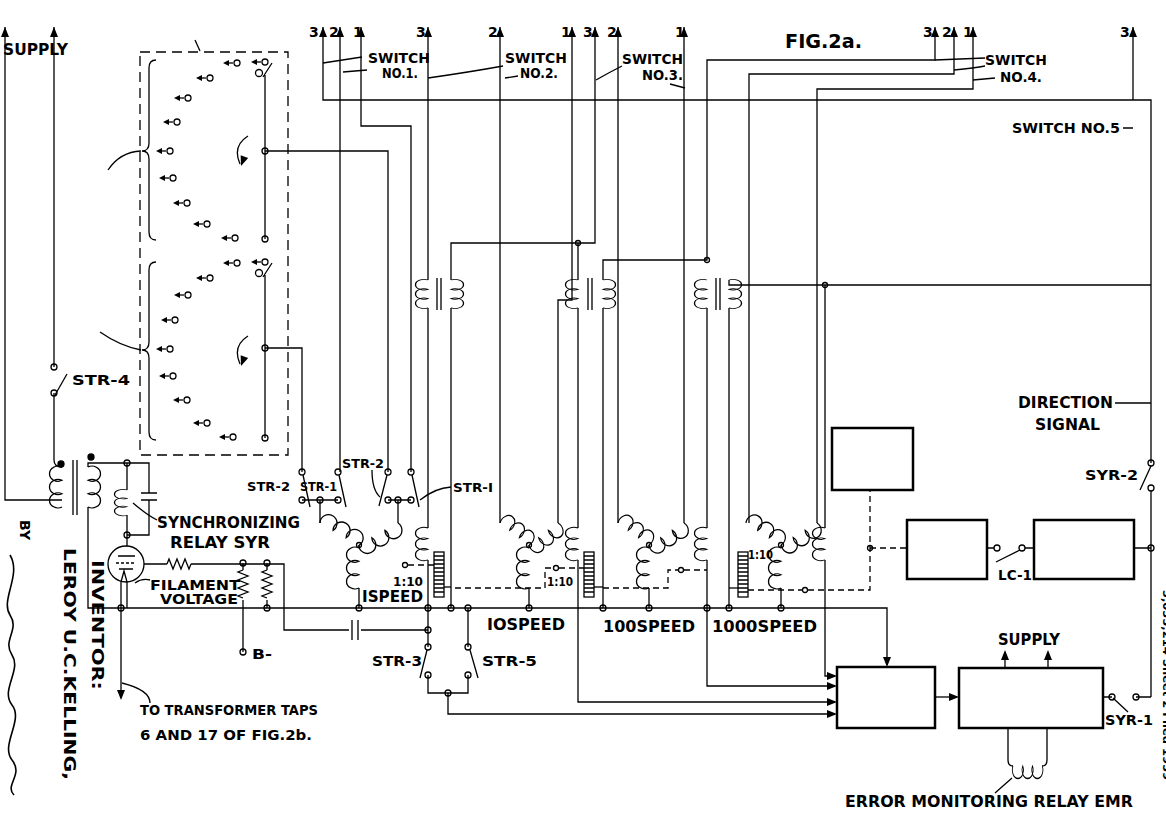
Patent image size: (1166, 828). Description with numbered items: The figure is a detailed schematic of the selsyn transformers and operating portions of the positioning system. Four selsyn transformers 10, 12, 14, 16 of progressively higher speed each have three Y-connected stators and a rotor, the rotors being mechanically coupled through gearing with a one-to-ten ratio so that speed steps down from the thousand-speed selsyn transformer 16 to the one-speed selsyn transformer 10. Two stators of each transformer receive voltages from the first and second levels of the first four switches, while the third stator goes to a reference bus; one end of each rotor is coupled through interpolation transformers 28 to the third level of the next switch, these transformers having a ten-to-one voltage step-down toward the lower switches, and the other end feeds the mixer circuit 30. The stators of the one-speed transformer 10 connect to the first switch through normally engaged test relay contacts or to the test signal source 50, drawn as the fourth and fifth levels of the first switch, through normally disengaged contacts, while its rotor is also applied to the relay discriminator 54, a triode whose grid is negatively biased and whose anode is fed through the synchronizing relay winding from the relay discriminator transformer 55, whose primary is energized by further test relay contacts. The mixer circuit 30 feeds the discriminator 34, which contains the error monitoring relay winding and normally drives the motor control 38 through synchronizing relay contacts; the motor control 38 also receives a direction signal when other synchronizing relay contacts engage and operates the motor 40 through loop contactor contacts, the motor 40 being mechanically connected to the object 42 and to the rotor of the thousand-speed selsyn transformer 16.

The test signal source 50 is at (140, 75).
The relay discriminator transformer 55 is at (85, 455).
The relay discriminator 54 is at (115, 549).
The interpolation transformers 28 is at (455, 238).
The 1-speed selsyn transformer 10 is at (340, 568).
The 10-speed selsyn transformer 12 is at (535, 523).
The 100-speed selsyn transformer 14 is at (652, 523).
The 1000-speed selsyn transformer 16 is at (785, 523).
The object 42 is at (873, 428).
The motor 40 is at (950, 520).
The motor control 38 is at (1081, 520).
The mixer circuit 30 is at (888, 729).
The discriminator 34 is at (982, 729).